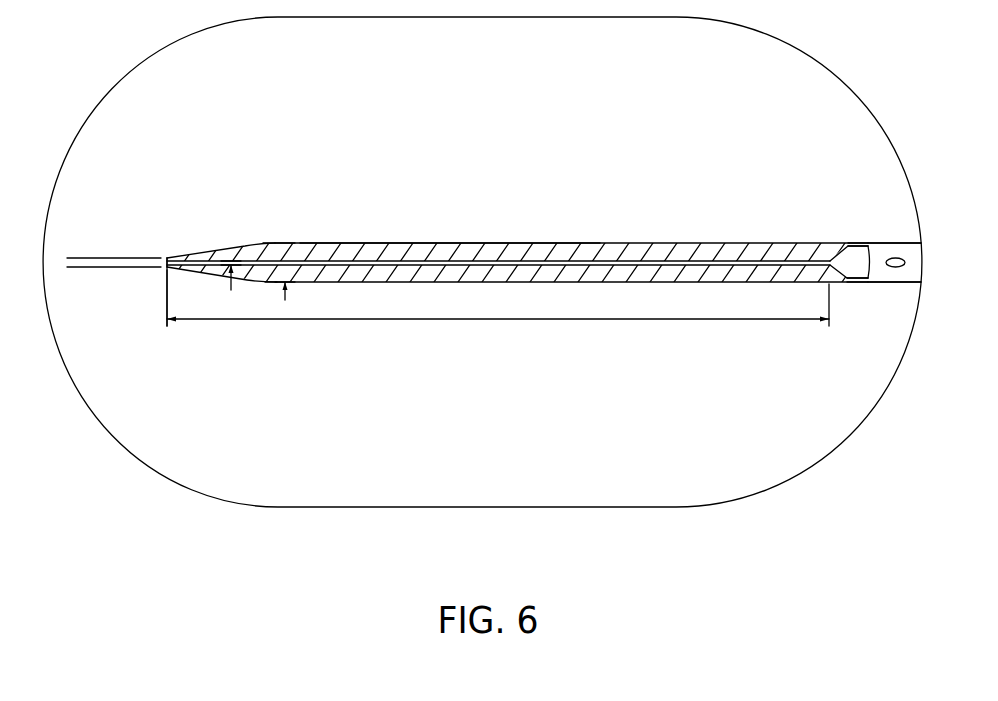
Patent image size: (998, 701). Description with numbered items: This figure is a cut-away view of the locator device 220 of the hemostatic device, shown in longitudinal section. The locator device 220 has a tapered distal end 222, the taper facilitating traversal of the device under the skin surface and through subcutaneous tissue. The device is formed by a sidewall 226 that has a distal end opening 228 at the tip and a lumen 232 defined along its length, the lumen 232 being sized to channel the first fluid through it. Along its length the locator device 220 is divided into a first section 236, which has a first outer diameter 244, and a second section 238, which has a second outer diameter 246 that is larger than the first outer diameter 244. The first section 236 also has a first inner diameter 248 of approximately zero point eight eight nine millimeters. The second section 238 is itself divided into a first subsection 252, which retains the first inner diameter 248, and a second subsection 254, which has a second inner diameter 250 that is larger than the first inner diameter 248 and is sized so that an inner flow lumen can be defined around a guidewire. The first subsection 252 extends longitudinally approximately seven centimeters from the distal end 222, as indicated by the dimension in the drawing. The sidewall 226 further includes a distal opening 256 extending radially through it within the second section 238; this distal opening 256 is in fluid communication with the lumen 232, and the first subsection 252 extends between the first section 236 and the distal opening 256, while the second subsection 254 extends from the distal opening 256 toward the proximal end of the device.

The locator device 220 is at (538, 412).
The distal end 222 is at (159, 298).
The sidewall 226 is at (379, 236).
The distal end opening 228 is at (167, 257).
The lumen 232 is at (866, 258).
The first section 236 is at (200, 233).
The second section 238 is at (589, 235).
The first outer diameter 244 is at (80, 233).
The second outer diameter 246 is at (285, 242).
The first inner diameter 248 is at (231, 260).
The second inner diameter 250 is at (851, 241).
The first subsection 252 is at (454, 235).
The second subsection 254 is at (852, 284).
The distal opening 256 is at (903, 284).